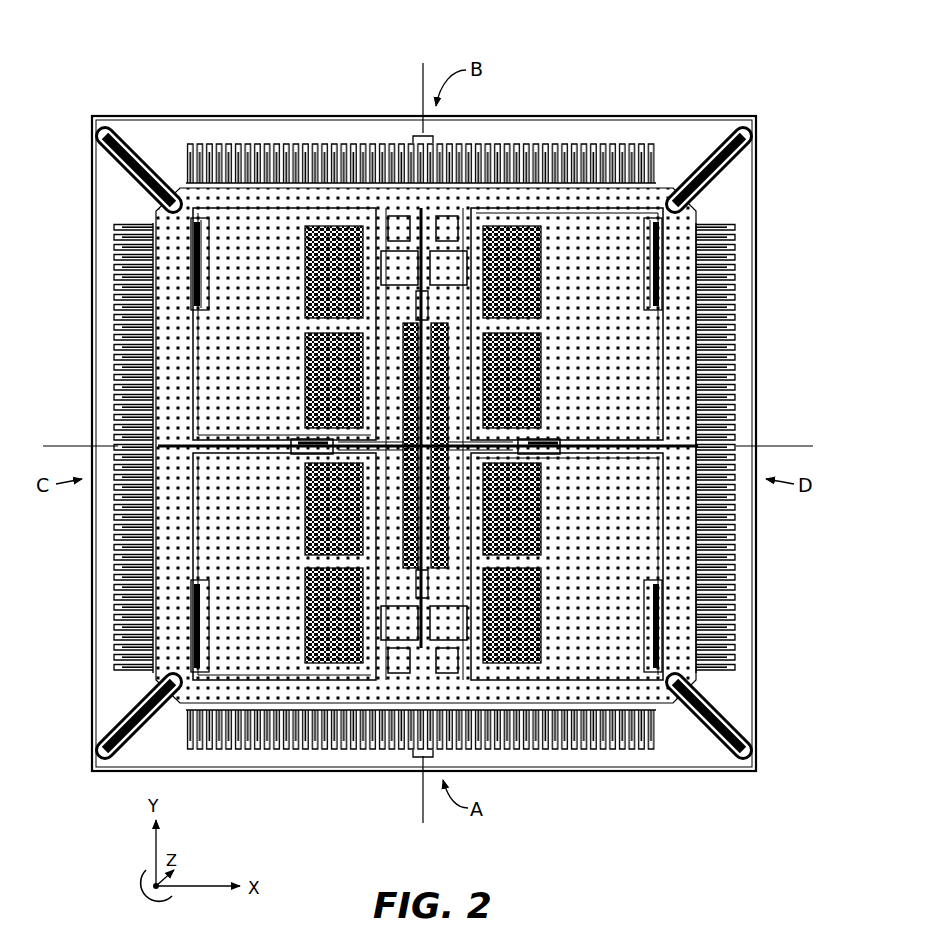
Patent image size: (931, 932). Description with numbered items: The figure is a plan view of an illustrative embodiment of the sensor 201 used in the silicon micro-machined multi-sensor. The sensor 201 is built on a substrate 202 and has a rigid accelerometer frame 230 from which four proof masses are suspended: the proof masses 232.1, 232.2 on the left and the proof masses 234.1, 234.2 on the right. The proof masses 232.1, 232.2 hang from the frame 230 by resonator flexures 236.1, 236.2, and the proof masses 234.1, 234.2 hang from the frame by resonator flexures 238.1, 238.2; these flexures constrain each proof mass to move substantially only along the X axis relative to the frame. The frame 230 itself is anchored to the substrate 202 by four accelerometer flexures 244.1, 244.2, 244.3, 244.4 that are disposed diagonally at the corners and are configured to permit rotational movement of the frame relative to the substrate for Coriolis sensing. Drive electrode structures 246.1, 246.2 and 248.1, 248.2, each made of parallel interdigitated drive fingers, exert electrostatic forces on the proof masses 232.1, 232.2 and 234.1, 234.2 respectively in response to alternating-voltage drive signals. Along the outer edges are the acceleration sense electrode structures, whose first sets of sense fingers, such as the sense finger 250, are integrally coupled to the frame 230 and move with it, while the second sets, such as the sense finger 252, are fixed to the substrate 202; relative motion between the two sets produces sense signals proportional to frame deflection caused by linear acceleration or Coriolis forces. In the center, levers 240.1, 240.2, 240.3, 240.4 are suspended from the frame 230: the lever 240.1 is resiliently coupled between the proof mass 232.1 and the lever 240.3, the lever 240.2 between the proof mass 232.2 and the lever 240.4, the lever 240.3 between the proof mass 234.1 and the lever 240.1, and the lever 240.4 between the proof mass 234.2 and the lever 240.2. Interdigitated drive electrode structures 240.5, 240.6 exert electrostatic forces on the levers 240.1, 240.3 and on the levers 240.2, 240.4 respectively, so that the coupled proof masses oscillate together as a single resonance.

The sensor 201 is at (655, 70).
The substrate 202 is at (424, 443).
The rigid accelerometer frame 230 is at (424, 434).
The proof mass 232.1 is at (258, 424).
The proof mass 232.2 is at (266, 662).
The proof mass 234.1 is at (630, 419).
The proof mass 234.2 is at (630, 649).
The resonator flexure 236.1 is at (160, 204).
The resonator flexure 236.2 is at (162, 690).
The resonator flexure 238.1 is at (668, 186).
The resonator flexure 238.2 is at (670, 688).
The lever 240.1 is at (402, 268).
The lever 240.2 is at (402, 623).
The lever 240.3 is at (451, 268).
The lever 240.4 is at (451, 623).
The drive electrode structure 240.5 is at (418, 297).
The drive electrode structure 240.6 is at (418, 583).
The accelerometer flexure 244.1 is at (112, 168).
The accelerometer flexure 244.2 is at (722, 150).
The accelerometer flexure 244.3 is at (115, 716).
The accelerometer flexure 244.4 is at (715, 712).
The drive electrode structure 246.1 is at (296, 288).
The drive electrode structure 246.2 is at (296, 514).
The drive electrode structure 248.1 is at (535, 286).
The drive electrode structure 248.2 is at (535, 514).
The sense finger 250 is at (155, 165).
The sense finger 252 is at (185, 138).